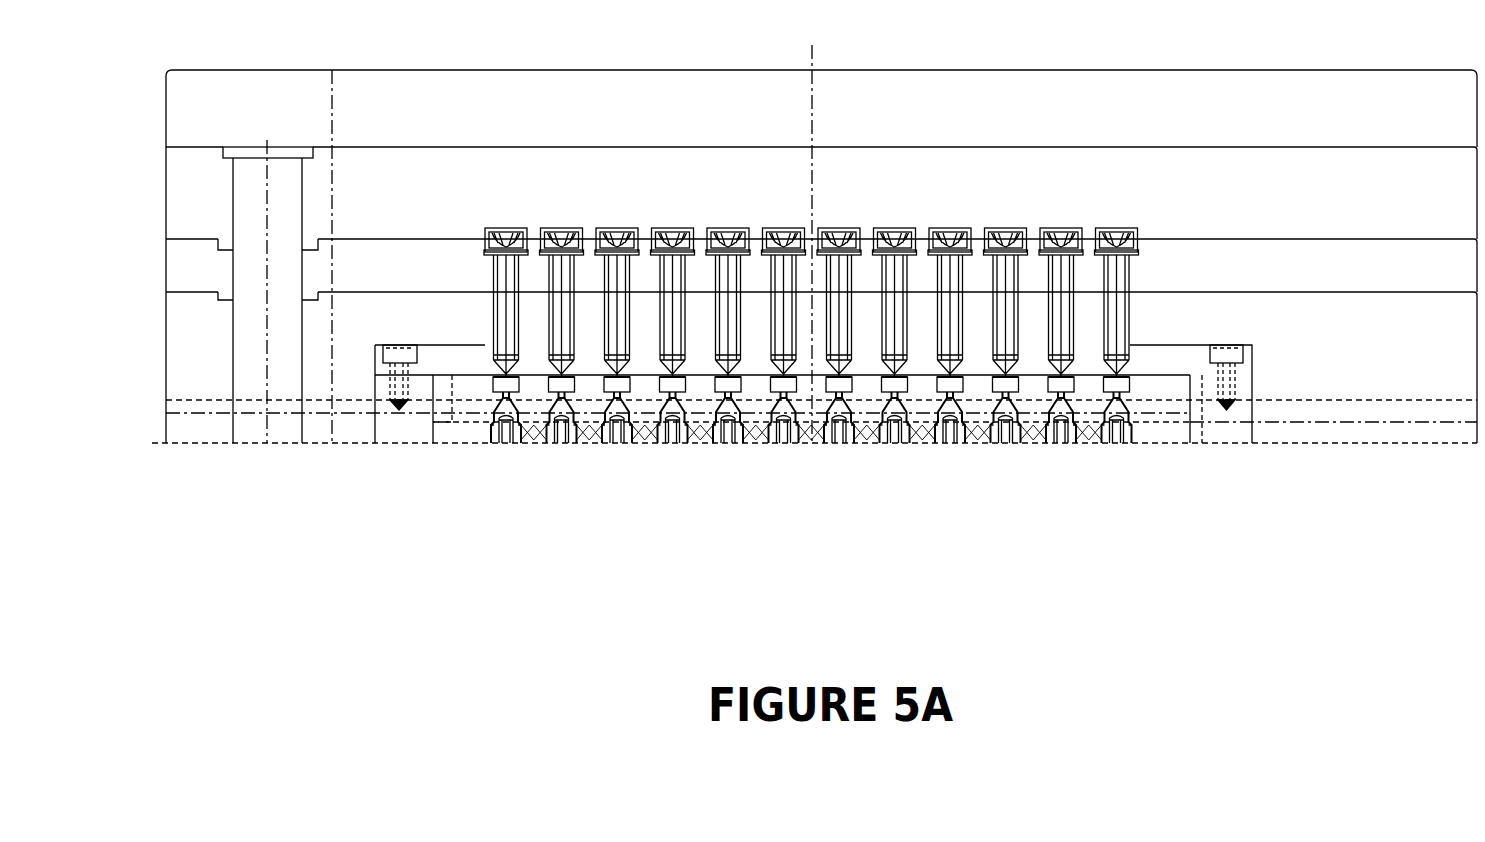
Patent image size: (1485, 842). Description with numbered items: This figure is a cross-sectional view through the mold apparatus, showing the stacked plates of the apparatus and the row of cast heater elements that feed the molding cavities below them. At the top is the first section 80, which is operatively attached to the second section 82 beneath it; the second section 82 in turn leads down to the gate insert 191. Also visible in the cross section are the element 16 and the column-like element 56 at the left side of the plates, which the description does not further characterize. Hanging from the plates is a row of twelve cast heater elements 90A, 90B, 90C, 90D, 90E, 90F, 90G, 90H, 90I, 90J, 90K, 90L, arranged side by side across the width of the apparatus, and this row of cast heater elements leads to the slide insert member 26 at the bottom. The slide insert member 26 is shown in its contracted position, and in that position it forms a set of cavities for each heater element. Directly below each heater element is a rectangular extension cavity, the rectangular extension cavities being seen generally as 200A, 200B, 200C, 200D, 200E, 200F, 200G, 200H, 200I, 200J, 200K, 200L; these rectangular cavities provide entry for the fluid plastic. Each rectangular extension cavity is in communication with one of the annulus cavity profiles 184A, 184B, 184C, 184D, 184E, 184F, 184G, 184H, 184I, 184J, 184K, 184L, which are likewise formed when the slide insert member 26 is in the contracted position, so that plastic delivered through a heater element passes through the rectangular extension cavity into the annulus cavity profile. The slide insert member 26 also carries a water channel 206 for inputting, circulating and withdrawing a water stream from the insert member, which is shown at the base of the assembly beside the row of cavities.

The first section 80 is at (915, 87).
The second section 82 is at (1272, 167).
The mold plate 16 is at (372, 267).
The gate insert 191 is at (400, 315).
The support column 56 is at (247, 268).
The water channel 206 is at (460, 407).
The slide insert member 26 is at (1197, 353).
The cast heater element 90A is at (490, 272).
The cast heater element 90B is at (548, 278).
The cast heater element 90C is at (603, 276).
The cast heater element 90D is at (659, 273).
The cast heater element 90E is at (715, 278).
The cast heater element 90F is at (770, 272).
The cast heater element 90G is at (851, 272).
The cast heater element 90H is at (907, 270).
The cast heater element 90I is at (962, 275).
The cast heater element 90J is at (1018, 272).
The cast heater element 90K is at (1074, 272).
The cast heater element 90L is at (1130, 285).
The rectangular extension cavity 200A is at (492, 385).
The rectangular extension cavity 200B is at (549, 388).
The rectangular extension cavity 200C is at (629, 388).
The rectangular extension cavity 200D is at (686, 388).
The rectangular extension cavity 200E is at (742, 388).
The rectangular extension cavity 200F is at (797, 388).
The rectangular extension cavity 200G is at (850, 388).
The rectangular extension cavity 200H is at (908, 388).
The rectangular extension cavity 200I is at (963, 388).
The rectangular extension cavity 200J is at (1019, 388).
The rectangular extension cavity 200K is at (1074, 388).
The rectangular extension cavity 200L is at (1130, 382).
The annulus cavity profile 184A is at (496, 406).
The annulus cavity profile 184B is at (550, 425).
The annulus cavity profile 184C is at (605, 415).
The annulus cavity profile 184D is at (660, 402).
The annulus cavity profile 184E is at (717, 415).
The annulus cavity profile 184F is at (772, 415).
The annulus cavity profile 184G is at (830, 414).
The annulus cavity profile 184H is at (903, 412).
The annulus cavity profile 184I is at (962, 415).
The annulus cavity profile 184J is at (1015, 415).
The annulus cavity profile 184K is at (1073, 415).
The annulus cavity profile 184L is at (1130, 415).